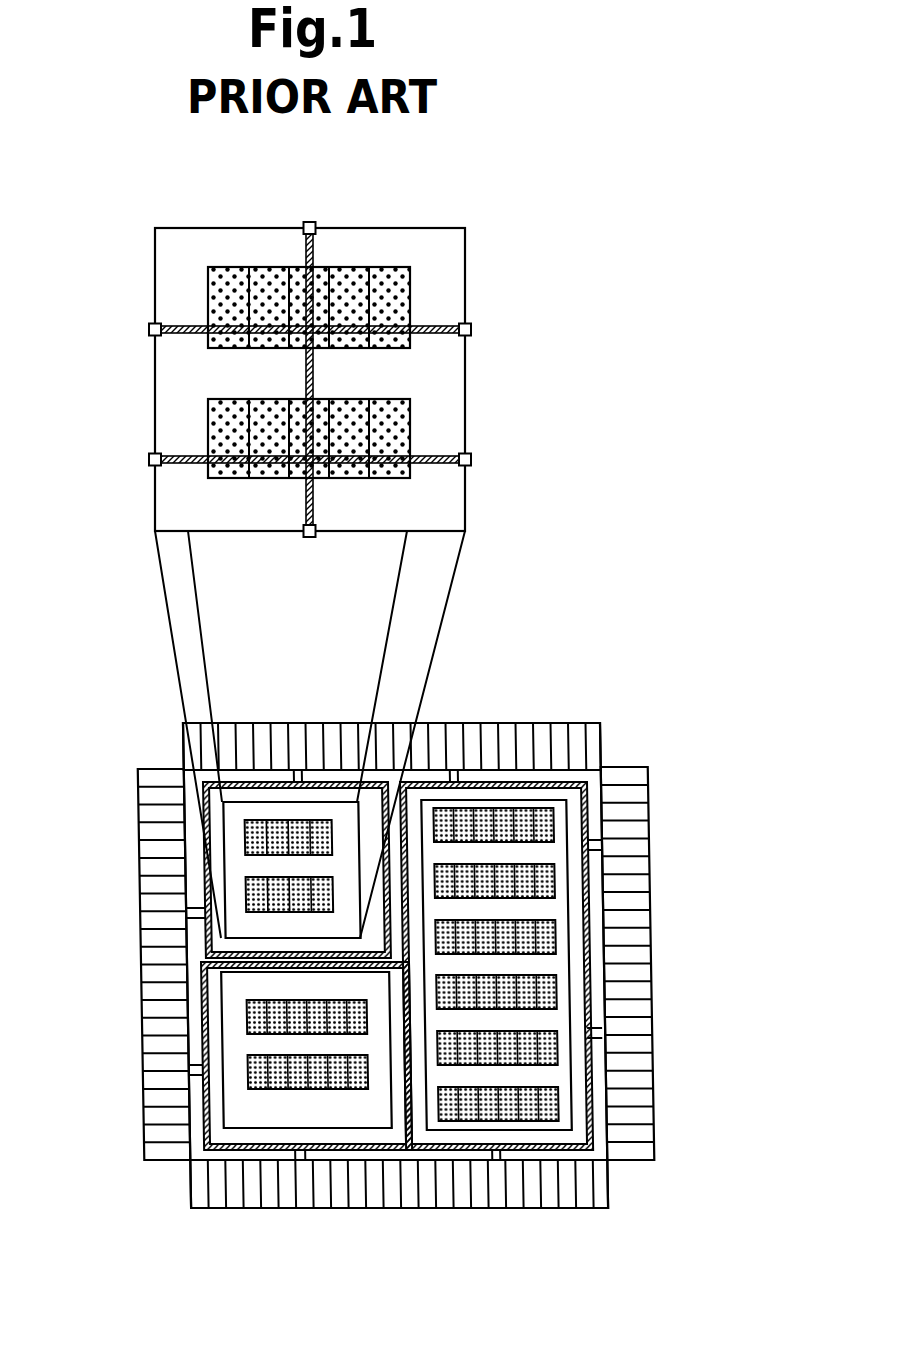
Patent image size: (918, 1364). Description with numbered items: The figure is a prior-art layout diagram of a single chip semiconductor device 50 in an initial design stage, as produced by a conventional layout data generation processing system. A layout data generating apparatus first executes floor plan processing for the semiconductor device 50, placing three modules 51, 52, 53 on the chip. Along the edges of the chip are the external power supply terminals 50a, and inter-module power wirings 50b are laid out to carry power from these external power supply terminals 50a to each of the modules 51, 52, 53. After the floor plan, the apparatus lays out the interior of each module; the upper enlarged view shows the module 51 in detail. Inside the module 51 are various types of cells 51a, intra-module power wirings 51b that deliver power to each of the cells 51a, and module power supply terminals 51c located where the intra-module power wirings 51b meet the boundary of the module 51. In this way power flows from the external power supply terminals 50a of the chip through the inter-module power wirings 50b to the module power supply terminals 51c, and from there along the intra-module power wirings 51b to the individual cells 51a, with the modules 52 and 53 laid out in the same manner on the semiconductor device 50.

The semiconductor device 50 is at (590, 720).
The external power supply terminals 50a is at (298, 722).
The inter-module power wirings 50b is at (568, 781).
The module 51 is at (190, 228).
The cells 51a is at (228, 268).
The intra-module power wirings 51b is at (313, 250).
The module power supply terminals 51c is at (310, 222).
The module 52 is at (258, 1115).
The module 53 is at (551, 962).